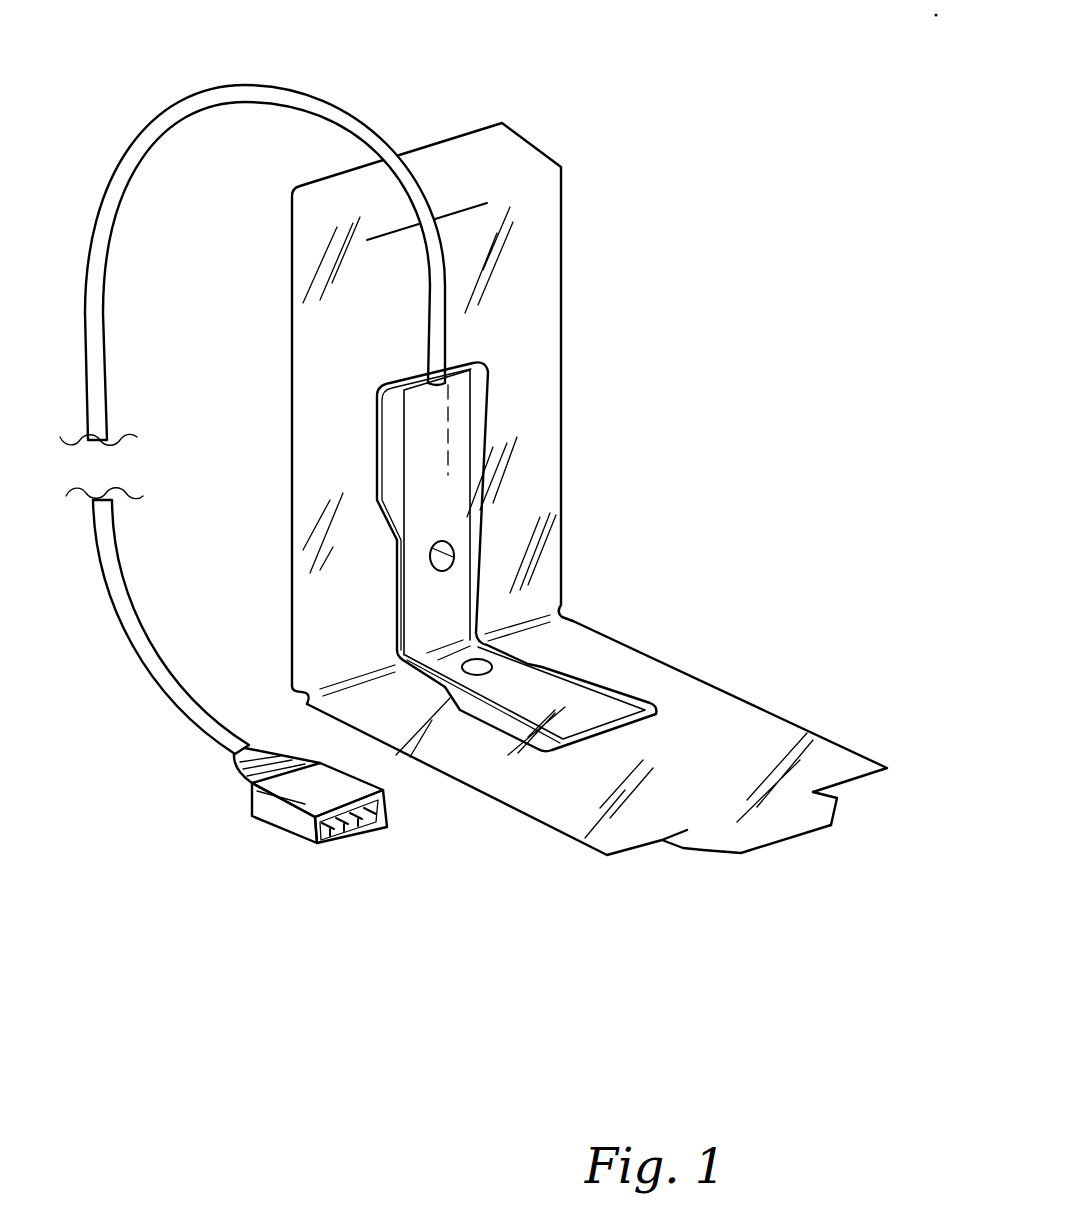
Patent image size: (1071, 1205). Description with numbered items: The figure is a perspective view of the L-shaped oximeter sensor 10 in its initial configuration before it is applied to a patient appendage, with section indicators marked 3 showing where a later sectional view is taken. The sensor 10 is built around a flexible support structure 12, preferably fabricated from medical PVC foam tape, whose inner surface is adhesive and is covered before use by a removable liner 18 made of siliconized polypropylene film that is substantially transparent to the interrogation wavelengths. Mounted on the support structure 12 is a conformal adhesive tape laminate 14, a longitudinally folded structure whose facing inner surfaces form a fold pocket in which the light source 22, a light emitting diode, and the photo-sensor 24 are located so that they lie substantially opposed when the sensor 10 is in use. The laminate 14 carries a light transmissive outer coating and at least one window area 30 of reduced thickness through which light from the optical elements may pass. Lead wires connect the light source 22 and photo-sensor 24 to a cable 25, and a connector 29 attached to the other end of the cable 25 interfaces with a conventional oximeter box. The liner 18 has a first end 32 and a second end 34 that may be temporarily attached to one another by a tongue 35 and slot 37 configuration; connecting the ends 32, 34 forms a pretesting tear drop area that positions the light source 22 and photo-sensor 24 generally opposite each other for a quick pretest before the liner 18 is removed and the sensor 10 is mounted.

The oximeter sensor 10 is at (613, 494).
The flexible support structure 12 is at (492, 556).
The conformal adhesive tape laminate 14 is at (540, 698).
The removable liner 18 is at (723, 727).
The light source 22 is at (447, 545).
The photo-sensor 24 is at (483, 658).
The cable 25 is at (114, 204).
The connector 29 is at (272, 817).
The window area 30 is at (441, 568).
The first end 32 is at (498, 165).
The second end 34 is at (822, 770).
The tongue 35 is at (758, 831).
The slot 37 is at (480, 210).
The section line for FIG. 3 is at (422, 137).